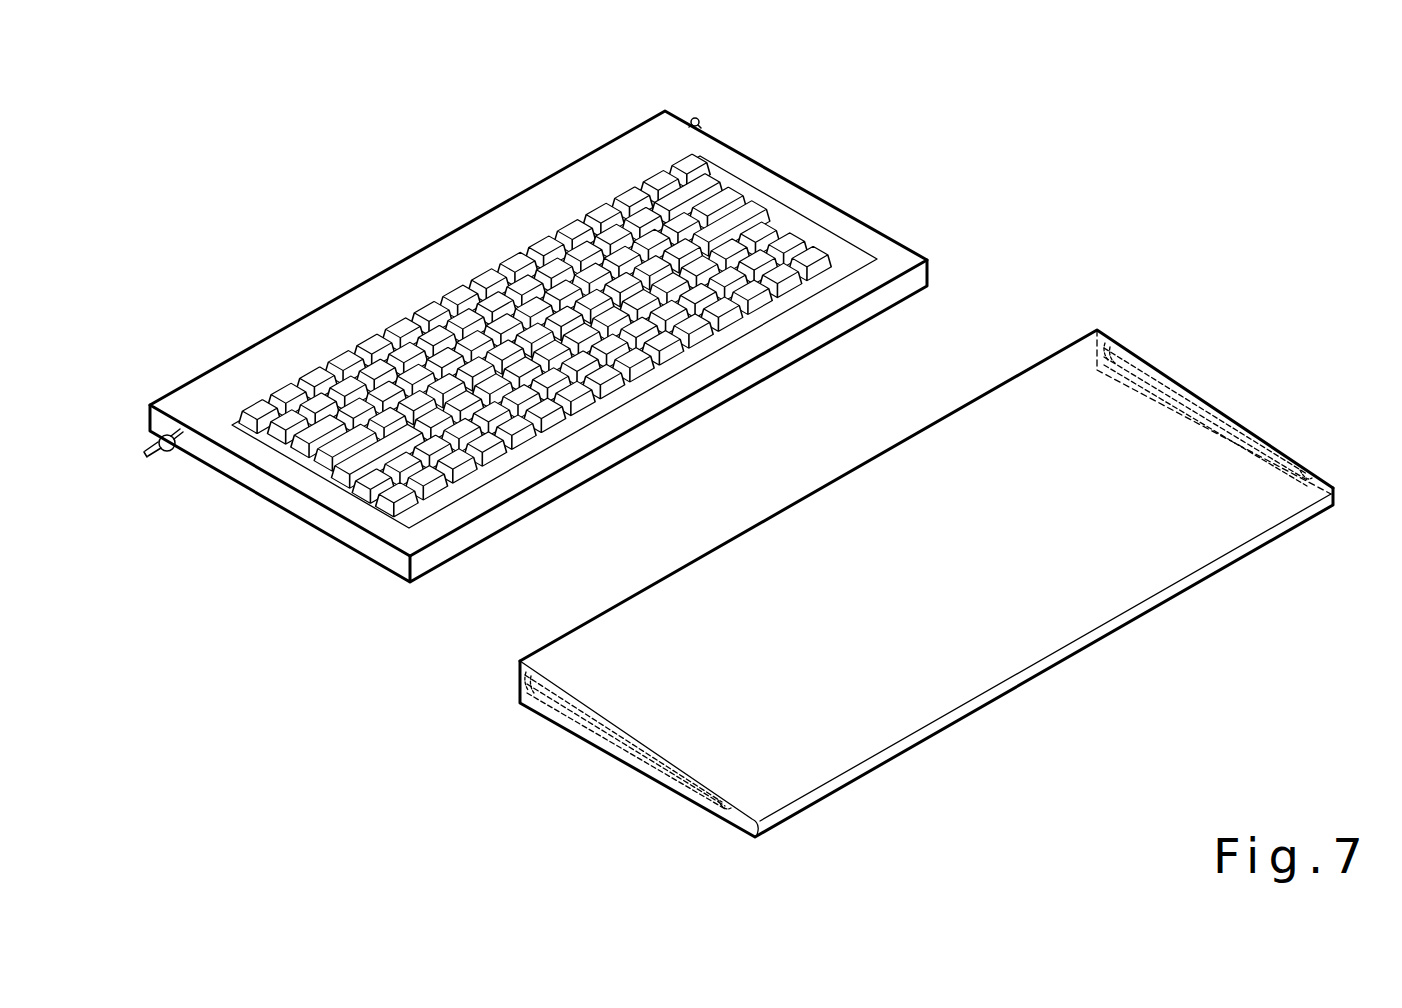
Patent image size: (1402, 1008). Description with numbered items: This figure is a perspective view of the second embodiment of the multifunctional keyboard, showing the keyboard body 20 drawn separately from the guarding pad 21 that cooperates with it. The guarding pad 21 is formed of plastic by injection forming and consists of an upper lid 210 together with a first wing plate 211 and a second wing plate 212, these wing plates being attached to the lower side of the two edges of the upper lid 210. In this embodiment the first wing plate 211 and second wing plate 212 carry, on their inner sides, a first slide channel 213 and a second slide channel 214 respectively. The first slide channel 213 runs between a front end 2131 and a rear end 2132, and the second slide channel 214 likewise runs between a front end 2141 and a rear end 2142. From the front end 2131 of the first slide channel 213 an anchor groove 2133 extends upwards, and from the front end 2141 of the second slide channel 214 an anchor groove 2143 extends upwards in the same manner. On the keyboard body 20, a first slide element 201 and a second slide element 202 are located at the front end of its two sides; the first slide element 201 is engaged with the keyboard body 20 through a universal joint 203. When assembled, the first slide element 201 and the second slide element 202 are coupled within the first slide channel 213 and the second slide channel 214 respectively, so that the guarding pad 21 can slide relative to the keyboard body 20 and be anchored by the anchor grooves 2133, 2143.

The keyboard body 20 is at (425, 262).
The first slide element 201 is at (152, 438).
The second slide element 202 is at (698, 118).
The universal joint 203 is at (169, 452).
The guarding pad 21 is at (1030, 645).
The upper lid 210 is at (848, 490).
The first wing plate 211 is at (598, 740).
The second wing plate 212 is at (1233, 427).
The first slide channel 213 is at (645, 773).
The second slide channel 214 is at (1193, 390).
The front end of the first slide channel 2131 is at (537, 710).
The rear end of the first slide channel 2132 is at (722, 820).
The anchor groove of the first slide channel 2133 is at (520, 697).
The front end of the second slide channel 2141 is at (1128, 362).
The rear end of the second slide channel 2142 is at (1307, 473).
The anchor groove of the second slide channel 2143 is at (1110, 346).